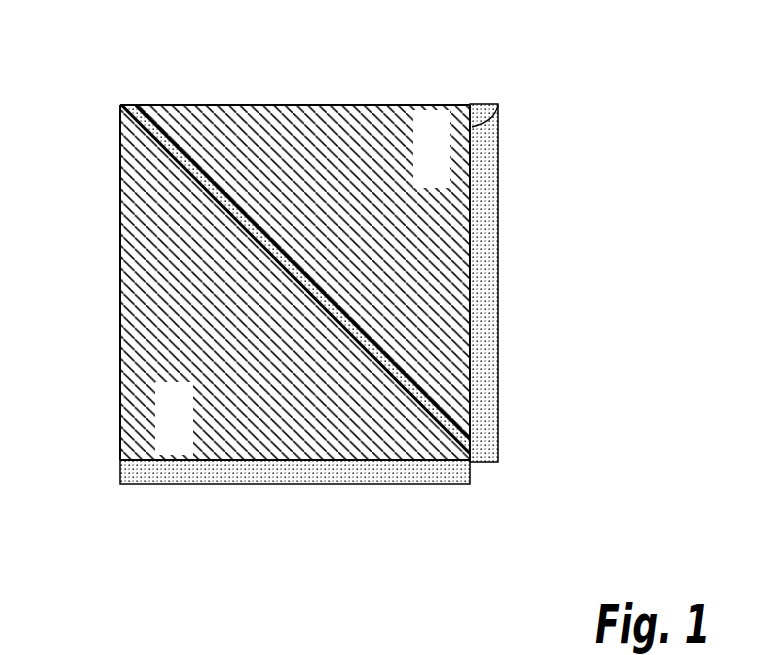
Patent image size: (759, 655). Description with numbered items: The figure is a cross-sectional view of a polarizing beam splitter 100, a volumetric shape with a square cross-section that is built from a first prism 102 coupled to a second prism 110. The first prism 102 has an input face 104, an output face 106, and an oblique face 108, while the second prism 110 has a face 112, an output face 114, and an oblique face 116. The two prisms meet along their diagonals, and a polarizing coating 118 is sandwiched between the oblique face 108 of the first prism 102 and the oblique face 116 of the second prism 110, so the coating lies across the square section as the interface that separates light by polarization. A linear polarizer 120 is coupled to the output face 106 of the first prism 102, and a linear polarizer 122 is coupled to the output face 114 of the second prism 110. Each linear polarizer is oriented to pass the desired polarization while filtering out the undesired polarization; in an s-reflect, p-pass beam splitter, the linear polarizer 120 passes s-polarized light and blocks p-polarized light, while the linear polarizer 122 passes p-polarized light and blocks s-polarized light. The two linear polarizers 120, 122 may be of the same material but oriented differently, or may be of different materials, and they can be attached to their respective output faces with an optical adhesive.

The polarizing beam splitter 100 is at (660, 100).
The first prism 102 is at (189, 428).
The input face 104 is at (120, 413).
The output face 106 is at (145, 463).
The oblique face 108 is at (455, 445).
The second prism 110 is at (447, 160).
The face 112 is at (297, 104).
The output face 114 is at (498, 104).
The oblique face 116 is at (432, 412).
The polarizing coating 118 is at (127, 105).
The linear polarizer 120 is at (240, 475).
The linear polarizer 122 is at (486, 194).